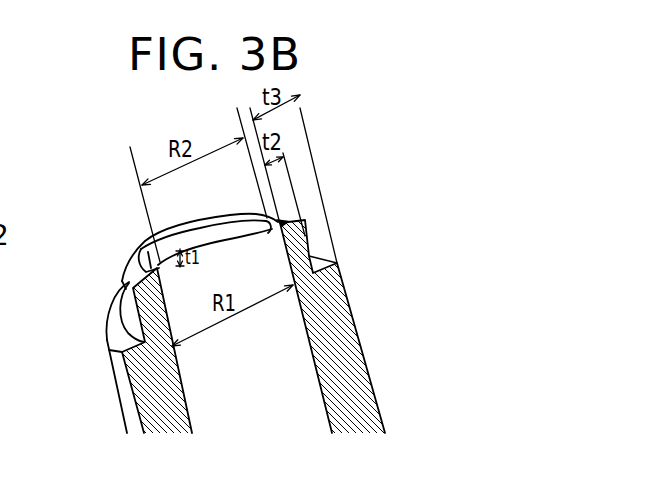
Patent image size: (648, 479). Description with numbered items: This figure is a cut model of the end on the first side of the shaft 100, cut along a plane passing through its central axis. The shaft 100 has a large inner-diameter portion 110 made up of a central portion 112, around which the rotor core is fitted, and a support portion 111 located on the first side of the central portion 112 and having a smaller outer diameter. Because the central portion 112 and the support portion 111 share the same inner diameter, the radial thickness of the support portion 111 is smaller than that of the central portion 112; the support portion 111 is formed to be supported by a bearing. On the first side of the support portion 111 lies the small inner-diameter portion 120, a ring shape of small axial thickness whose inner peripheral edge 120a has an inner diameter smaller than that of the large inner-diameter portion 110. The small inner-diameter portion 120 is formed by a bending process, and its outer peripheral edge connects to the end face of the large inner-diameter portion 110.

The shaft 100 is at (102, 152).
The large inner-diameter portion 110 is at (56, 283).
The support portion 111 is at (126, 296).
The central portion 112 is at (113, 368).
The small inner-diameter portion 120 is at (150, 262).
The inner peripheral edge 120a is at (249, 227).